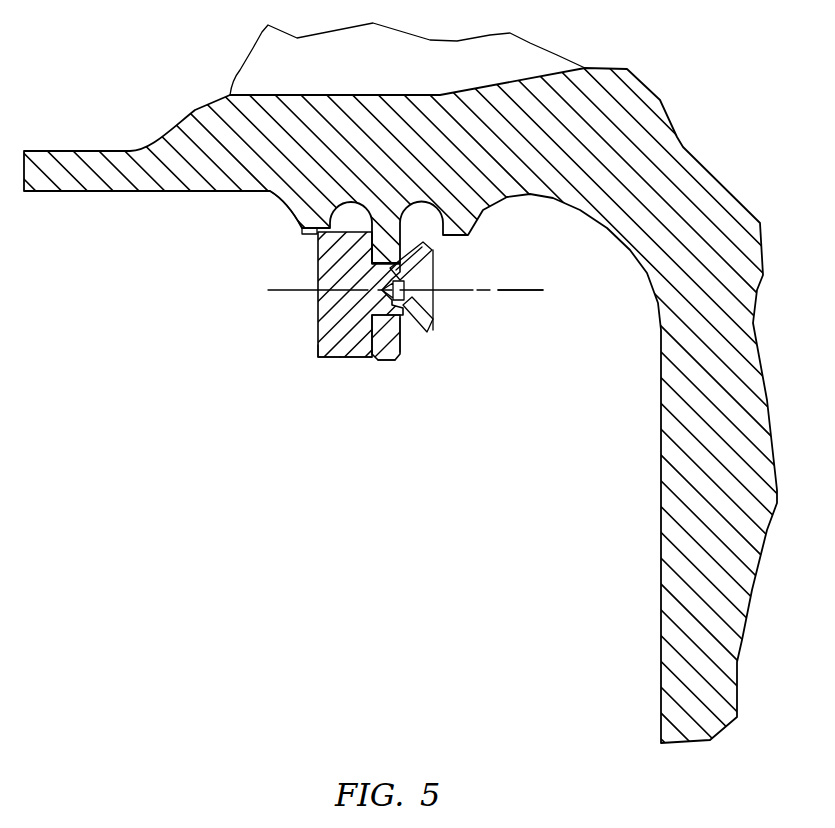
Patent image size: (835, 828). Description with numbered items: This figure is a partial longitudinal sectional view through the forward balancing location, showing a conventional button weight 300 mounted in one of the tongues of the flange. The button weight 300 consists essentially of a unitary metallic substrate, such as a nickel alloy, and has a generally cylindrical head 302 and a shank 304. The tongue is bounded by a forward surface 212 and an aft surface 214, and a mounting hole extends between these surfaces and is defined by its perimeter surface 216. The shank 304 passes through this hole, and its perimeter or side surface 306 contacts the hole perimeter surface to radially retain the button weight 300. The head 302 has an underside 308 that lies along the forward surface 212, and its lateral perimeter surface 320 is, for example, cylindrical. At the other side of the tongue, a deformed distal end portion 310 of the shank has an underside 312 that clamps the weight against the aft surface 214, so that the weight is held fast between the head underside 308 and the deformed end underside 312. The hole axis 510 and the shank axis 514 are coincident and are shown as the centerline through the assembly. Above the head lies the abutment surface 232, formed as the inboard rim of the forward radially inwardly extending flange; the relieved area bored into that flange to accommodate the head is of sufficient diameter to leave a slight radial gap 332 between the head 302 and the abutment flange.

The button weight 300 is at (276, 341).
The head 302 is at (327, 303).
The shank 304 is at (407, 281).
The perimeter/side surface 306 is at (385, 361).
The underside 308 is at (372, 262).
The deformed distal end portion 310 is at (434, 320).
The underside 312 is at (395, 325).
The lateral perimeter surface 320 is at (326, 358).
The radial gap 332 is at (299, 226).
The forward surface 212 is at (360, 358).
The aft surface 214 is at (403, 338).
The perimeter surface 216 is at (412, 262).
The abutment surface 232 is at (313, 243).
The axis 510 is at (515, 290).
The shank axis 514 is at (523, 293).